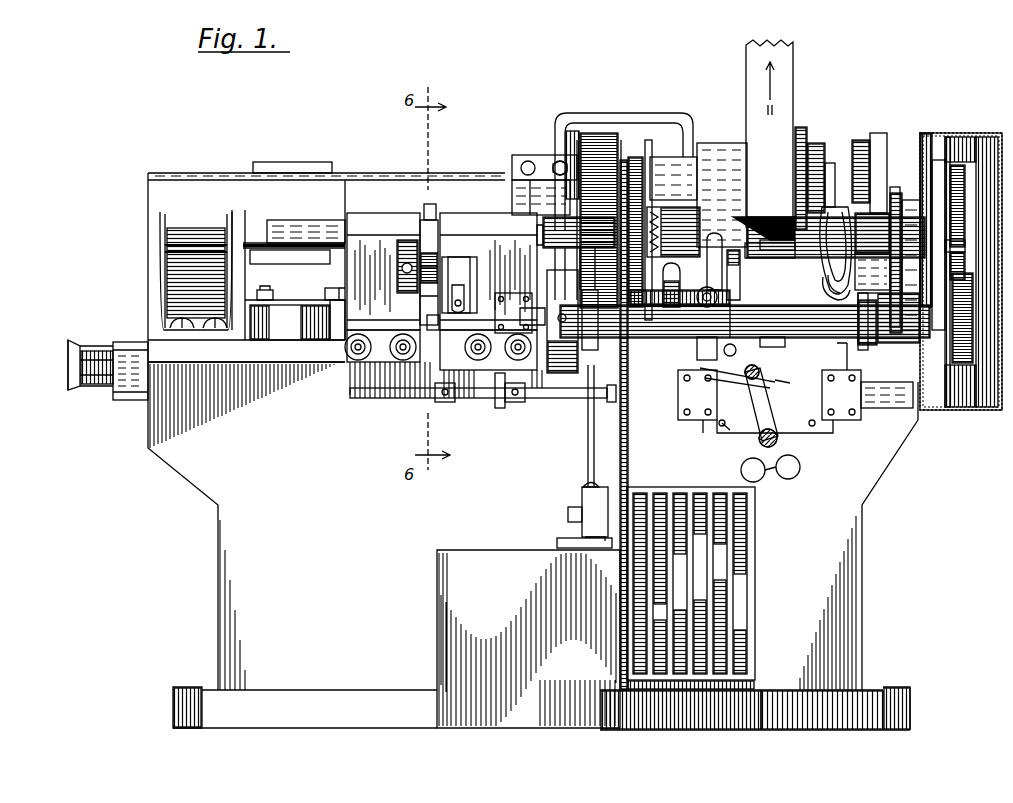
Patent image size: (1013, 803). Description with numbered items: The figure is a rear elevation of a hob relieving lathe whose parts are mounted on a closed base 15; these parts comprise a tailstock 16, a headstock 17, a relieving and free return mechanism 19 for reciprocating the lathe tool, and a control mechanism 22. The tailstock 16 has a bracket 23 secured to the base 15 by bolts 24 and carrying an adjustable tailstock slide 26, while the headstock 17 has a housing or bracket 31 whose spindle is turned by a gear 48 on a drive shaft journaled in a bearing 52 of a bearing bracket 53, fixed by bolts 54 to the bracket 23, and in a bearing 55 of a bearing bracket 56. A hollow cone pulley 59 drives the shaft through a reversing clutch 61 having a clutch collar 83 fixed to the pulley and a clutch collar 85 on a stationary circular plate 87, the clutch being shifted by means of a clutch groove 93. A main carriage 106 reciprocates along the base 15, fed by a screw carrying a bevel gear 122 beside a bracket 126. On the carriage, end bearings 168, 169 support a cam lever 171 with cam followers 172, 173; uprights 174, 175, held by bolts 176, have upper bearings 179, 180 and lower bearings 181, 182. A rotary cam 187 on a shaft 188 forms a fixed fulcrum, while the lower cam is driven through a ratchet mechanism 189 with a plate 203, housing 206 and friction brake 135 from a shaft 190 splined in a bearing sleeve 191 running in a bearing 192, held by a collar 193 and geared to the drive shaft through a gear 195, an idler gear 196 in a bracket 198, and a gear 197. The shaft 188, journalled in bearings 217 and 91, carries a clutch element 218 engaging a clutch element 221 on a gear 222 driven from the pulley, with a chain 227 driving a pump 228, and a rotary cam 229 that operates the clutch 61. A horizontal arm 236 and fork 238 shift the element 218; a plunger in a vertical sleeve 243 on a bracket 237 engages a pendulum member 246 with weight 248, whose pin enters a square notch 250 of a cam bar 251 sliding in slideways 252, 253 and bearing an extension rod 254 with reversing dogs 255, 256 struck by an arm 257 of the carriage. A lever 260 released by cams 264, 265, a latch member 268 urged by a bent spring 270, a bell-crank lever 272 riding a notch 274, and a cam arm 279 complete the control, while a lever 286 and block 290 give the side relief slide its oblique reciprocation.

The closed base 15 is at (848, 600).
The tailstock 16 is at (190, 167).
The headstock 17 is at (712, 132).
The relieving and free return mechanism 19 is at (334, 370).
The control mechanism 22 is at (814, 449).
The bracket 23 is at (160, 238).
The bolts 24 is at (184, 320).
The tailstock slide 26 is at (297, 171).
The housing or bracket 31 is at (560, 128).
The gear 48 is at (602, 150).
The bearing 52 is at (518, 195).
The bearing bracket 53 is at (522, 160).
The bolts 54 is at (556, 162).
The bearing 55 is at (932, 138).
The bearing bracket 56 is at (896, 267).
The hollow cone pulley 59 is at (690, 165).
The reversing clutch 61 is at (833, 147).
The clutch collar 83 is at (814, 150).
The clutch collar 85 is at (865, 150).
The circular plate 87 is at (895, 152).
The bearing 91 is at (925, 230).
The clutch groove 93 is at (838, 170).
The main carriage 106 is at (308, 332).
The bevel gear 122 is at (82, 347).
The bracket 126 is at (120, 400).
The friction brake 135 is at (545, 320).
The end bearing 168 is at (403, 262).
The end bearing 169 is at (460, 255).
The cam lever 171 is at (440, 272).
The cam follower 172 is at (427, 318).
The cam follower 173 is at (440, 228).
The upright 174 is at (345, 278).
The upright 175 is at (498, 354).
The bolts 176 is at (356, 368).
The upper alined bearing 179 is at (370, 222).
The upper alined bearing 180 is at (502, 222).
The lower alined bearing 181 is at (378, 352).
The lower alined bearing 182 is at (458, 332).
The rotary cam 187 is at (428, 230).
The shaft 188 is at (298, 222).
The ratchet mechanism 189 is at (590, 432).
The shaft 190 is at (648, 339).
The bearing sleeve 191 is at (836, 324).
The bearing 192 is at (868, 312).
The collar 193 is at (860, 346).
The gear 195 is at (973, 342).
The idler gear 196 is at (965, 264).
The gear 197 is at (965, 214).
The bracket 198 is at (962, 242).
The plate 203 is at (614, 384).
The hollow cylindrical housing 206 is at (560, 382).
The bearing 217 is at (543, 238).
The clutch element 218 is at (700, 230).
The clutch element 221 is at (668, 220).
The gear 222 is at (638, 160).
The chain 227 is at (628, 480).
The pump 228 is at (581, 522).
The rotary cam 229 is at (848, 222).
The horizontal arm 236 is at (822, 278).
The bracket 237 is at (712, 430).
The fork 238 is at (712, 238).
The vertical sleeve 243 is at (792, 342).
The pendulum member 246 is at (765, 428).
The weight 248 is at (768, 478).
The square notch 250 is at (770, 440).
The cam bar 251 is at (918, 414).
The slideway 252 is at (690, 418).
The slideway 253 is at (856, 407).
The extension rod 254 is at (366, 398).
The reversing dog 255 is at (437, 396).
The reversing dog 256 is at (522, 404).
The arm 257 is at (496, 405).
The lever 260 is at (745, 307).
The cam 264 is at (766, 217).
The cam 265 is at (780, 245).
The latch member 268 is at (748, 378).
The bent spring 270 is at (724, 354).
The bell-crank lever 272 is at (770, 379).
The notch 274 is at (770, 384).
The cam arm 279 is at (672, 262).
The lever 286 is at (286, 300).
The block 290 is at (280, 330).